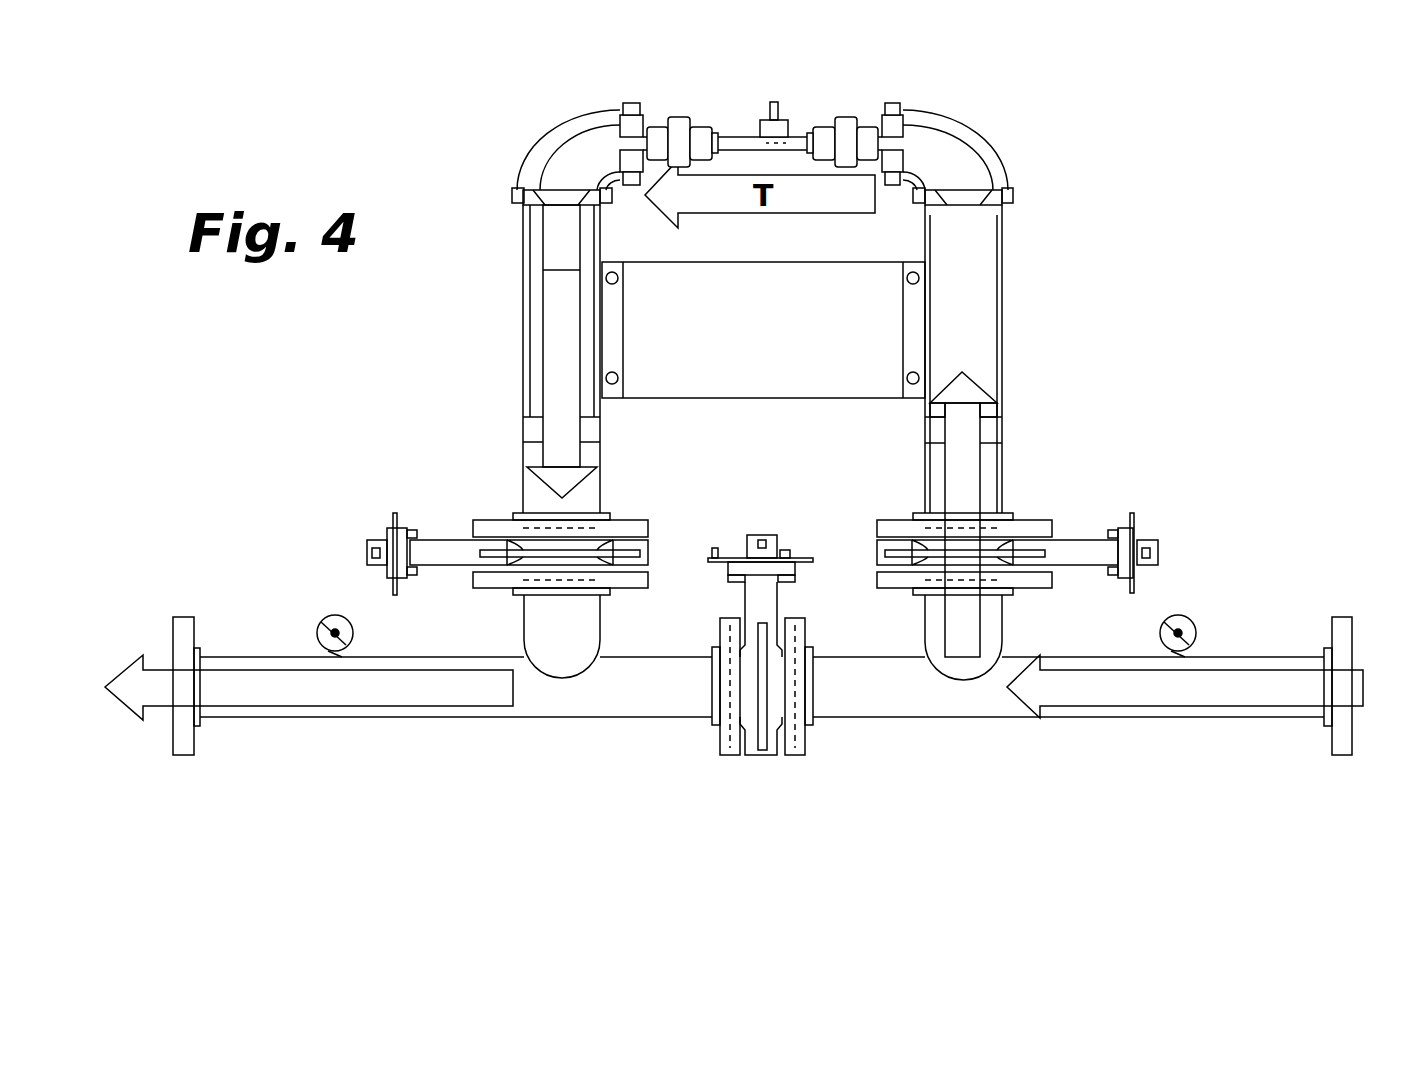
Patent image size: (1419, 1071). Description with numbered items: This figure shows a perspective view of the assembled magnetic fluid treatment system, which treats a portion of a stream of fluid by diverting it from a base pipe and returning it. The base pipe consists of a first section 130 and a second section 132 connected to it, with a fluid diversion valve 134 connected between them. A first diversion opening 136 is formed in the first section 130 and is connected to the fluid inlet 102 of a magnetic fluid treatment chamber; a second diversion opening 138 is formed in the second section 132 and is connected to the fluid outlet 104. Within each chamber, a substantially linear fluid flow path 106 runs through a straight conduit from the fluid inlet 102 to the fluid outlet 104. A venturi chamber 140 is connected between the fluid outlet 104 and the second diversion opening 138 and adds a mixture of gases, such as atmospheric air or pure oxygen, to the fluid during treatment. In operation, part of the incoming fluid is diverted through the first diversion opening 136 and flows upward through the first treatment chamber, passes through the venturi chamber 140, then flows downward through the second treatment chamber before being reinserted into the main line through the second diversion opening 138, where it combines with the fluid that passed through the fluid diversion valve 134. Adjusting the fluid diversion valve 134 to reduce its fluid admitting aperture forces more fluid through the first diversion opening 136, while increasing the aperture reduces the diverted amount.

The fluid inlet 102 is at (560, 192).
The fluid outlet 104 is at (533, 453).
The fluid flow path 106 is at (556, 397).
The first section 130 is at (965, 717).
The second section 132 is at (455, 717).
The fluid diversion valve 134 is at (765, 755).
The first diversion opening 136 is at (998, 655).
The second diversion opening 138 is at (540, 657).
The venturi chamber 140 is at (797, 130).